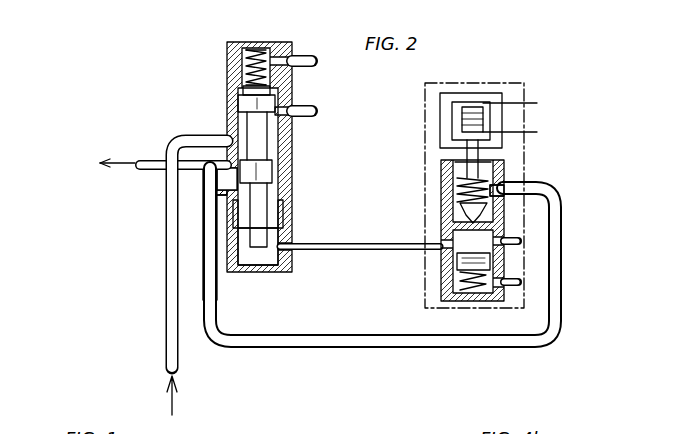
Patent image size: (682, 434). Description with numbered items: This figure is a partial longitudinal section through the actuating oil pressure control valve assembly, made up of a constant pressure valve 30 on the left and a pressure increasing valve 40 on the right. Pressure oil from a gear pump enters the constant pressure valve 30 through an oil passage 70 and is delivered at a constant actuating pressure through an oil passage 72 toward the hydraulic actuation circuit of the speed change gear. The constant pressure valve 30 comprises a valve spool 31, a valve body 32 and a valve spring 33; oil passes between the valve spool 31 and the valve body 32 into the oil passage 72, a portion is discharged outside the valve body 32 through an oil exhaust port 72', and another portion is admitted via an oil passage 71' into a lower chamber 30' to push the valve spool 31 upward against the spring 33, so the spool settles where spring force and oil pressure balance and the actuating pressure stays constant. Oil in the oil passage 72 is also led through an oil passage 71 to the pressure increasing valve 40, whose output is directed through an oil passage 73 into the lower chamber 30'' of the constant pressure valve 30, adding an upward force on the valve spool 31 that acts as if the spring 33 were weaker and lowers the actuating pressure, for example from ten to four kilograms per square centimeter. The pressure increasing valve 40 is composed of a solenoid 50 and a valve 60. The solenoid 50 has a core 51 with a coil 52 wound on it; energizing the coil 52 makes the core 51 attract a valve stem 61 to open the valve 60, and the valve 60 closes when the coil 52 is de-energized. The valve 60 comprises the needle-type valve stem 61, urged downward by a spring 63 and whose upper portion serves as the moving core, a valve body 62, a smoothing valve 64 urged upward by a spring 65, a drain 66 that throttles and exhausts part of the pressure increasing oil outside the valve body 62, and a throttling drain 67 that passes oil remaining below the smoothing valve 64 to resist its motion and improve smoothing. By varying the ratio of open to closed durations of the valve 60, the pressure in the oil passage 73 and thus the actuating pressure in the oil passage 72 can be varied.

The constant pressure valve 30 is at (237, 157).
The lower chamber 30' is at (279, 208).
The lower chamber 30'' is at (258, 265).
The valve spool 31 is at (265, 143).
The valve body 32 is at (276, 170).
The valve spring 33 is at (246, 72).
The pressure increasing valve 40 is at (462, 84).
The solenoid 50 is at (440, 112).
The core 51 is at (468, 100).
The coil 52 is at (524, 105).
The valve 60 is at (441, 203).
The valve stem 61 is at (498, 152).
The valve body 62 is at (504, 172).
The spring 63 is at (443, 184).
The smoothing valve 64 is at (455, 265).
The spring 65 is at (488, 300).
The drain 66 is at (518, 238).
The throttling drain 67 is at (518, 280).
The oil passage 70 is at (166, 340).
The oil passage 71 is at (382, 255).
The oil passage 71' is at (170, 235).
The oil passage 72 is at (163, 144).
The oil exhaust port 72' is at (312, 86).
The oil passage 73 is at (360, 227).